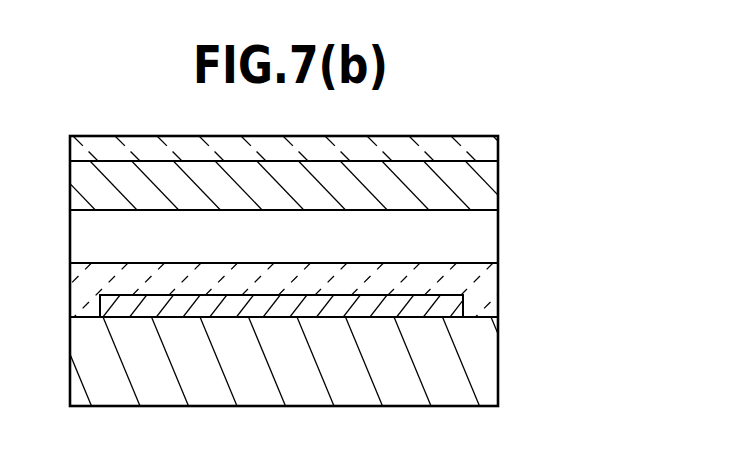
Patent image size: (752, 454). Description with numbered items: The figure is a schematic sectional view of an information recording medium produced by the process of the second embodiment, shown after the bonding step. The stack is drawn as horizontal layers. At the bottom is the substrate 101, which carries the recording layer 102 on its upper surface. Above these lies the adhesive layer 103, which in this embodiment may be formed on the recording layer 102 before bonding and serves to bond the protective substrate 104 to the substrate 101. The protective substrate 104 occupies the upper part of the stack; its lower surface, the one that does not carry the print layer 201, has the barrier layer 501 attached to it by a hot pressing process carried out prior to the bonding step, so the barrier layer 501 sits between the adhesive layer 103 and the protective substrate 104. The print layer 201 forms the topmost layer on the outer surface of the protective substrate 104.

The print layer 201 is at (486, 153).
The protective substrate 104 is at (486, 197).
The barrier layer 501 is at (486, 246).
The adhesive layer 103 is at (485, 292).
The recording layer 102 is at (448, 310).
The substrate 101 is at (483, 377).